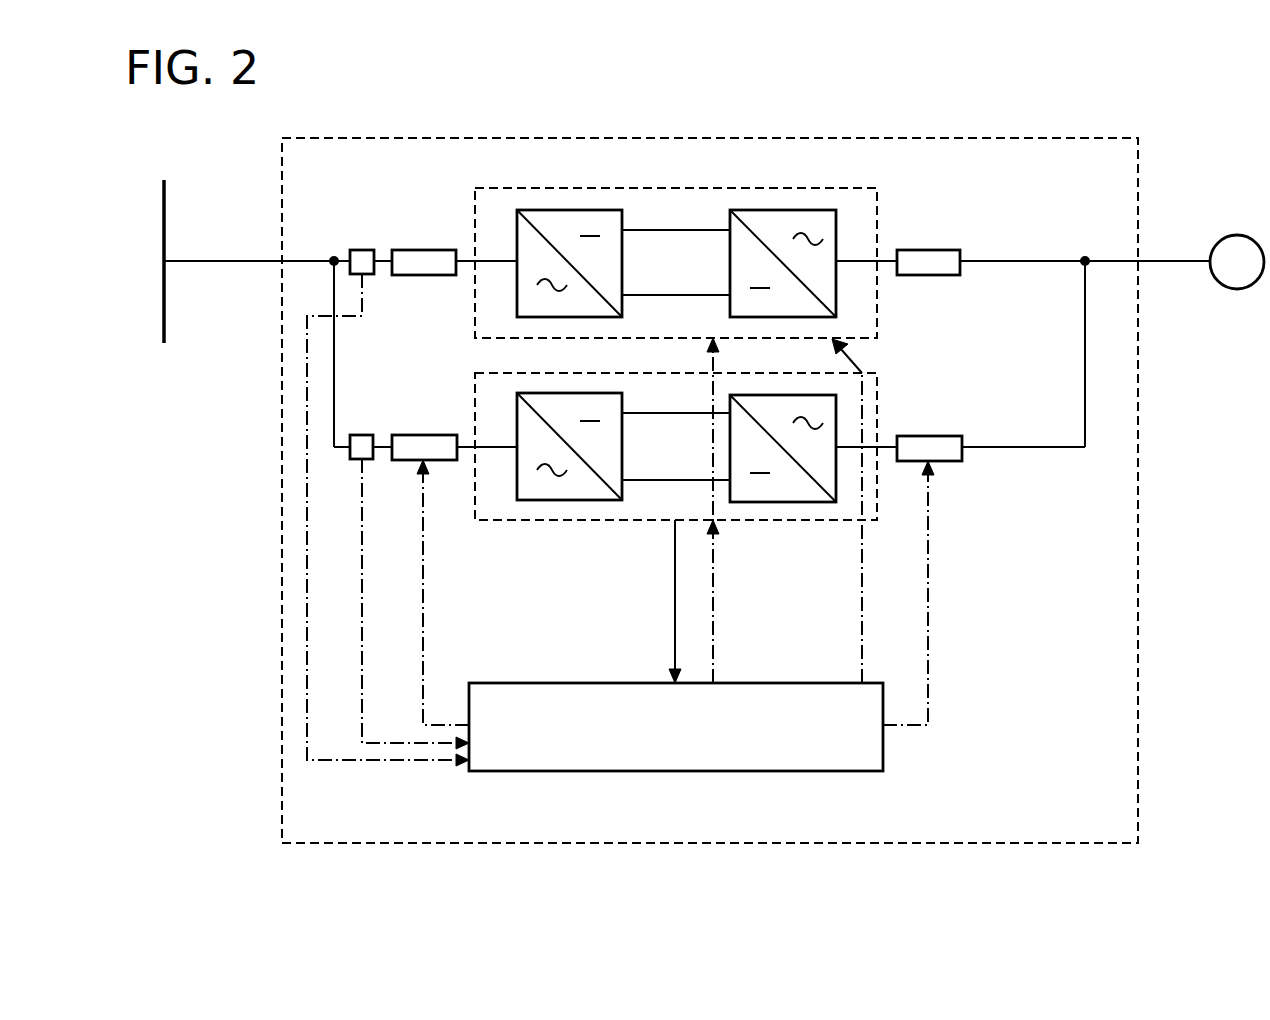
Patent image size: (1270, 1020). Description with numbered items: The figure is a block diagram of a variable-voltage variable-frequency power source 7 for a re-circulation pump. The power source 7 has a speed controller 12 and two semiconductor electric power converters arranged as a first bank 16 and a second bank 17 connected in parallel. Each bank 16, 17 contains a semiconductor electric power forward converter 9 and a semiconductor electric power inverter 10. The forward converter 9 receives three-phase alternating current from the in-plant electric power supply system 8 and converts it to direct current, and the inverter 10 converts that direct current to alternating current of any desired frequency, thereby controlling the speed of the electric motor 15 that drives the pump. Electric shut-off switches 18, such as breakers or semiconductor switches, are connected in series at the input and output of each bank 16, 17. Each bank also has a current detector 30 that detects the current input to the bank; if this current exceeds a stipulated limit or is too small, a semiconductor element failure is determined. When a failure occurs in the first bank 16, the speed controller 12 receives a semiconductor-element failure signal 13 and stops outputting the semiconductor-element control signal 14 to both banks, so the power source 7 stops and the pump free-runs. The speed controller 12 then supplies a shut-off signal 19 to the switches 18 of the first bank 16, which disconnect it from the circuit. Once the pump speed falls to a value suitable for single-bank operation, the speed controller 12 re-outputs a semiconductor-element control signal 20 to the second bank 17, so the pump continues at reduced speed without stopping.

The variable-voltage variable-frequency power source 7 is at (355, 845).
The in-plant electric power supply system 8 is at (163, 236).
The semiconductor electric power forward converter 9 is at (567, 209).
The semiconductor electric power inverter 10 is at (782, 209).
The speed controller 12 is at (677, 772).
The semiconductor-element failure signal 13 is at (673, 600).
The semiconductor-element control signal 14 is at (715, 600).
The electric motor 15 is at (1237, 235).
The first bank 16 is at (877, 195).
The second bank 17 is at (877, 384).
The electric shut-off switch 18 is at (422, 250).
The shut-off signal 19 is at (422, 591).
The semiconductor-element control signal 20 is at (860, 643).
The current detector 30 is at (362, 250).